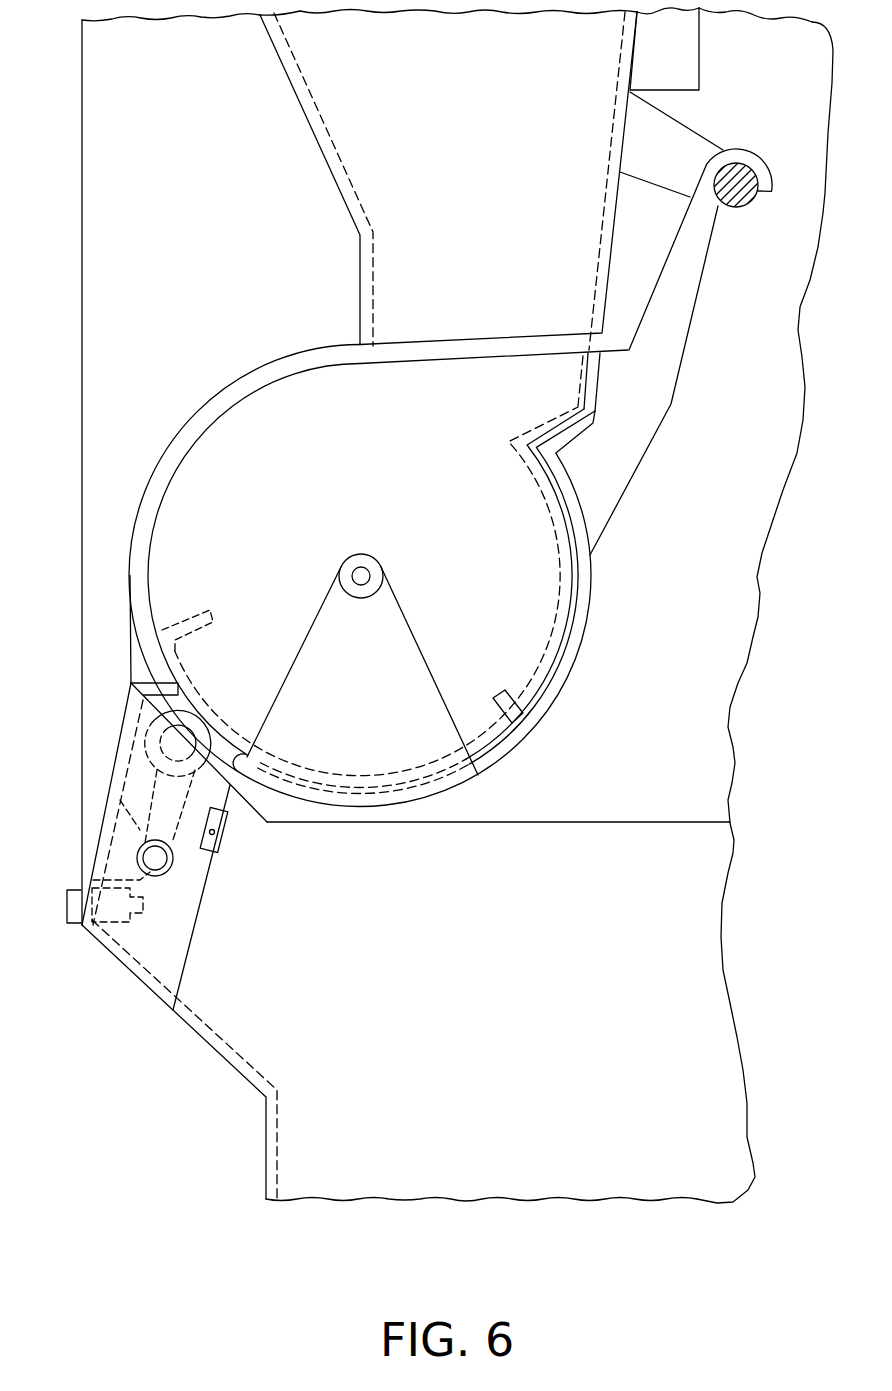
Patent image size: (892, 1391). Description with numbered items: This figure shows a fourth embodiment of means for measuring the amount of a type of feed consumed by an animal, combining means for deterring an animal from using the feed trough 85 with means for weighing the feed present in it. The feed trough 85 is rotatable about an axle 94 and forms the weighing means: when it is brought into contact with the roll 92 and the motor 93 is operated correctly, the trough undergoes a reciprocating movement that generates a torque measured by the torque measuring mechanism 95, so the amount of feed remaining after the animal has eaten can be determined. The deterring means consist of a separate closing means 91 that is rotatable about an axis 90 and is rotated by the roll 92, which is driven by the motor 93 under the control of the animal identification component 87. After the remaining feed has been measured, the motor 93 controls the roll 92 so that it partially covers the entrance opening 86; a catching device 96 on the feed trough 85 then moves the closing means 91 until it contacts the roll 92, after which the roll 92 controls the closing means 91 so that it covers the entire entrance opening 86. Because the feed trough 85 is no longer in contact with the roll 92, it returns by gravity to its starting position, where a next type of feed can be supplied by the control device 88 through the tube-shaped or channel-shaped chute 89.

The feed trough 85 is at (553, 692).
The entrance opening 86 is at (232, 397).
The animal identification component 87 is at (147, 947).
The control device 88 is at (670, 50).
The chute 89 is at (355, 138).
The axis 90 is at (379, 577).
The closing means 91 is at (385, 718).
The roll 92 is at (205, 747).
The motor 93 is at (166, 871).
The axle 94 is at (740, 200).
The torque measuring mechanism 95 is at (212, 832).
The catching device 96 is at (500, 700).